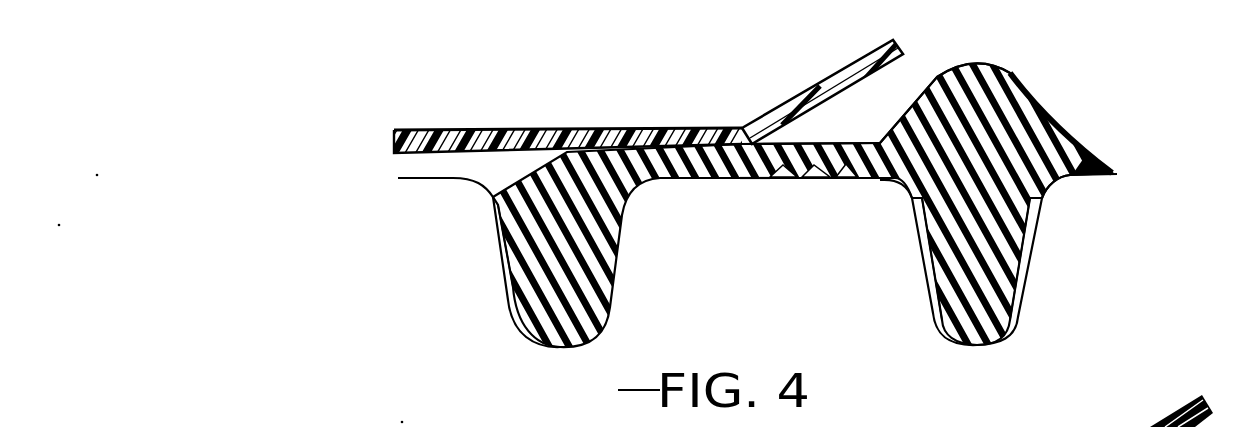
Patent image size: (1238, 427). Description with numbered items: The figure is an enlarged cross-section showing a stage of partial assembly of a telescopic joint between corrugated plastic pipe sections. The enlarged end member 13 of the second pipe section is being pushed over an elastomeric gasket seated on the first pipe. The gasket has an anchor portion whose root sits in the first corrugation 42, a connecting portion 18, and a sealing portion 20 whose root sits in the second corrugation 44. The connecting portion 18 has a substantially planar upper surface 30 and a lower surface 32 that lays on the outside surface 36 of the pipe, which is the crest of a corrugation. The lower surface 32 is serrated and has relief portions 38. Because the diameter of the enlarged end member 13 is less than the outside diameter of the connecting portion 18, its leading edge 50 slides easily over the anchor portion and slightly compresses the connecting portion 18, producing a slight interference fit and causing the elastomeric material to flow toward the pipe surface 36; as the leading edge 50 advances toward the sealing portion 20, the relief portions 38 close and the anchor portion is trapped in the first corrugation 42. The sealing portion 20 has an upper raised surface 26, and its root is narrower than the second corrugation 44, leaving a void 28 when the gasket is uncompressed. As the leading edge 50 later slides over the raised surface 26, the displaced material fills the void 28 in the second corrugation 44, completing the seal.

The enlarged end member 13 is at (482, 128).
The connecting portion 18 is at (683, 179).
The sealing portion 20 is at (1005, 95).
The upper raised surface 26 is at (1070, 132).
The void 28 is at (1022, 308).
The upper surface 30 is at (832, 142).
The lower surface 32 is at (762, 178).
The outside surface 36 is at (783, 178).
The relief portions 38 is at (810, 178).
The first corrugation 42 is at (608, 316).
The second corrugation 44 is at (1038, 239).
The leading edge 50 is at (750, 141).